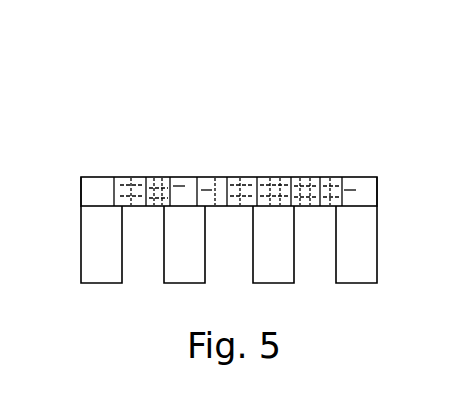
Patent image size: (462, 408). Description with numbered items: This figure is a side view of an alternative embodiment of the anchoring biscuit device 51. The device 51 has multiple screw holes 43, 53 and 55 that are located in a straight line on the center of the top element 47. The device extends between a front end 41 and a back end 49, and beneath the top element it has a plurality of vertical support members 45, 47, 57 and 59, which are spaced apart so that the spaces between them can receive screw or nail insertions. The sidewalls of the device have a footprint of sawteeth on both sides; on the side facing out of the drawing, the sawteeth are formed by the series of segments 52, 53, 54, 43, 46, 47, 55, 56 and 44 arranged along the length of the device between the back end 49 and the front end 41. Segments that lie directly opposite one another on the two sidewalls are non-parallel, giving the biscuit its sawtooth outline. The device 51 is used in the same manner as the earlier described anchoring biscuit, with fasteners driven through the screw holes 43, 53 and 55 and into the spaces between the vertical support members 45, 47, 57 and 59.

The anchoring biscuit device 51 is at (103, 128).
The sawtooth segment 52 is at (97, 183).
The screw hole 53 is at (125, 182).
The sawtooth segment 54 is at (180, 175).
The screw hole 43 is at (225, 176).
The sawtooth segment 46 is at (252, 180).
The top element 47 is at (273, 180).
The screw hole 55 is at (313, 182).
The sawtooth segment 56 is at (342, 177).
The sawtooth segment 44 is at (365, 182).
The front end 41 is at (378, 190).
The back end 49 is at (80, 187).
The vertical support member 45 is at (88, 277).
The vertical support member 59 is at (259, 277).
The vertical support member 57 is at (341, 277).